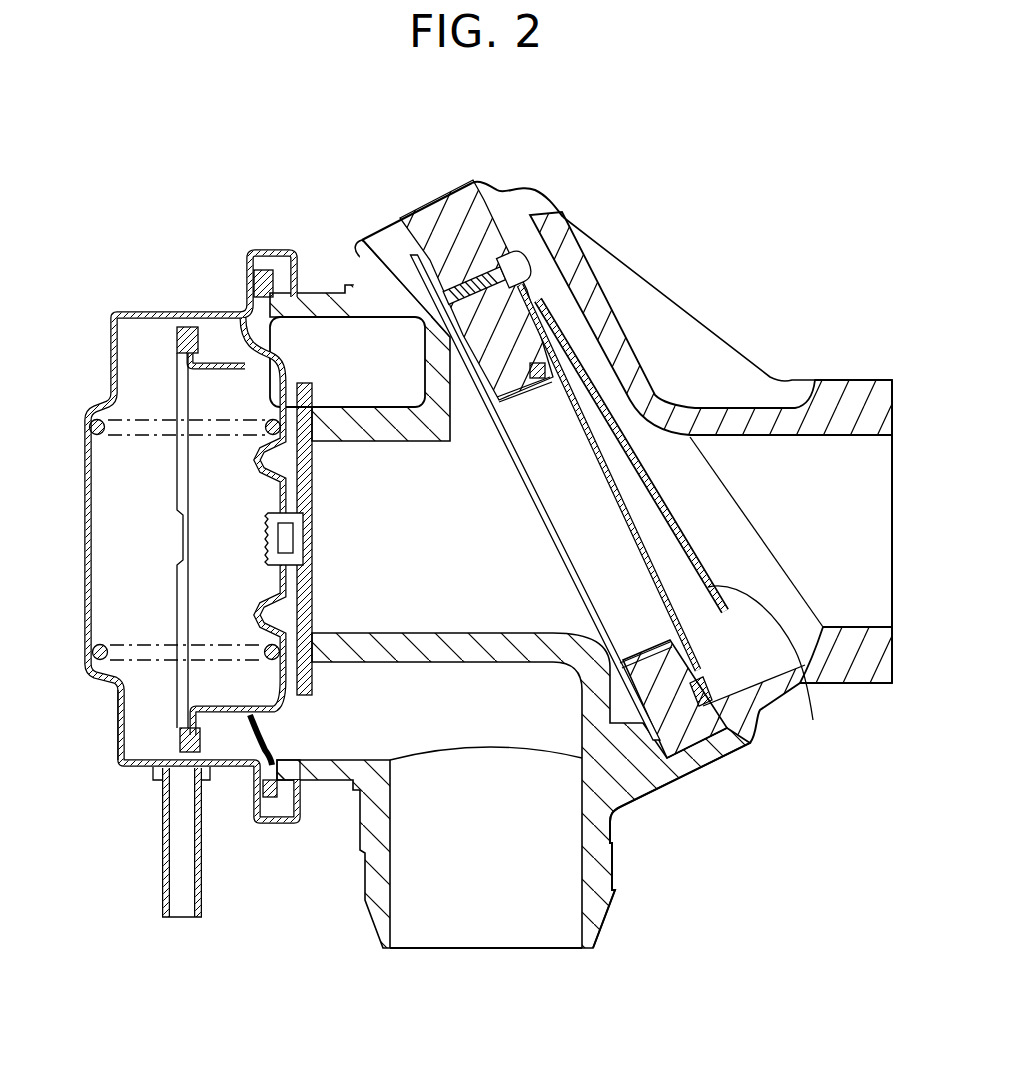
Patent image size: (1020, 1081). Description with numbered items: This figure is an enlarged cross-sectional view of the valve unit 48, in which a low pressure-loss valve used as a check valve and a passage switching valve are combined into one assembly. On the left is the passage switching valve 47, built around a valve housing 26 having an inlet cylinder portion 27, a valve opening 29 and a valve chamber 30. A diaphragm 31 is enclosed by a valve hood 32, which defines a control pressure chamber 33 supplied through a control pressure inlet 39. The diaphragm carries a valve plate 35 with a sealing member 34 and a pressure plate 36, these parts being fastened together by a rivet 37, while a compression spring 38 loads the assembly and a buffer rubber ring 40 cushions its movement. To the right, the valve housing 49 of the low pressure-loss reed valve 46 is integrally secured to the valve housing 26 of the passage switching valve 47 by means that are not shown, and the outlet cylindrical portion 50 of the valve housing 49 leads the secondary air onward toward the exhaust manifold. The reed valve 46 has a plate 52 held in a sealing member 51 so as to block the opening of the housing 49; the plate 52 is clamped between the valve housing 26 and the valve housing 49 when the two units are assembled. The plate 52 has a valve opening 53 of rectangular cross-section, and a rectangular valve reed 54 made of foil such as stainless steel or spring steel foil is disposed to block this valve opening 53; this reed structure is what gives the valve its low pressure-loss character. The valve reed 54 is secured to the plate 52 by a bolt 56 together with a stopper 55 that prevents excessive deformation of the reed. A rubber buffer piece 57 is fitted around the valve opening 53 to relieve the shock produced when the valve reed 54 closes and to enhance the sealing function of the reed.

The valve housing 26 is at (312, 298).
The inlet cylinder portion 27 is at (367, 873).
The valve opening 29 is at (360, 633).
The valve chamber 30 is at (333, 760).
The diaphragm 31 is at (240, 330).
The valve hood 32 is at (118, 318).
The control pressure chamber 33 is at (132, 740).
The sealing member 34 is at (307, 450).
The valve plate 35 is at (303, 383).
The pressure plate 36 is at (233, 717).
The rivet 37 is at (265, 533).
The compression spring 38 is at (93, 425).
The control pressure inlet 39 is at (162, 880).
The buffer rubber ring 40 is at (183, 332).
The low pressure-loss reed valve 46 is at (627, 564).
The passage switching valve 47 is at (221, 540).
The valve unit 48 is at (221, 529).
The valve housing 49 is at (620, 307).
The outlet cylindrical portion 50 is at (845, 390).
The sealing member 51 is at (703, 737).
The plate 52 is at (700, 748).
The valve opening 53 is at (560, 500).
The valve reed 54 is at (633, 538).
The stopper 55 is at (813, 720).
The bolt 56 is at (533, 263).
The rubber buffer piece 57 is at (700, 668).